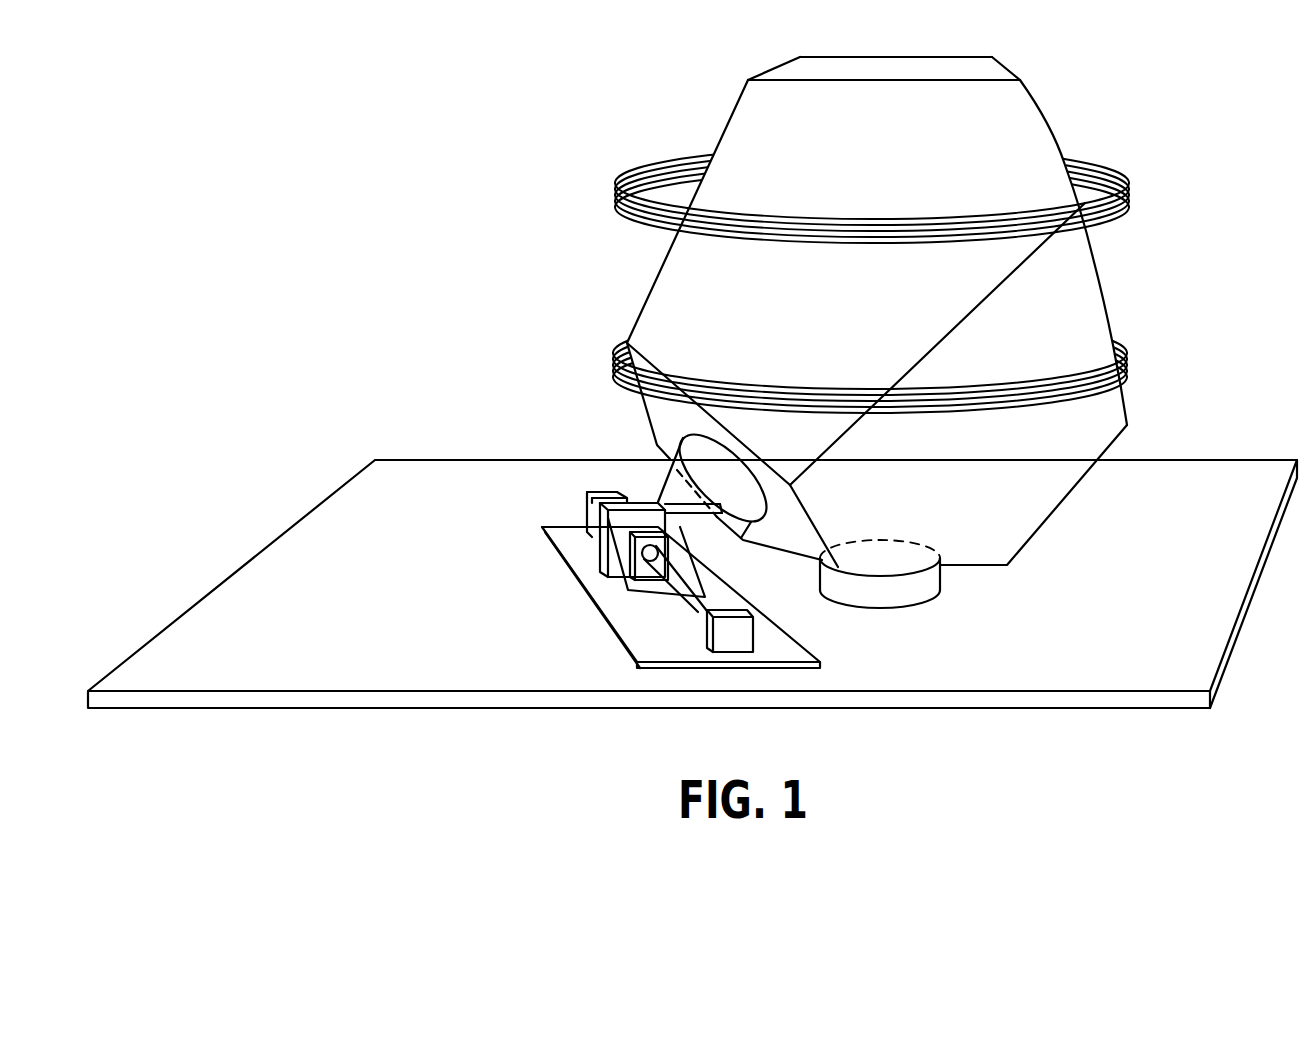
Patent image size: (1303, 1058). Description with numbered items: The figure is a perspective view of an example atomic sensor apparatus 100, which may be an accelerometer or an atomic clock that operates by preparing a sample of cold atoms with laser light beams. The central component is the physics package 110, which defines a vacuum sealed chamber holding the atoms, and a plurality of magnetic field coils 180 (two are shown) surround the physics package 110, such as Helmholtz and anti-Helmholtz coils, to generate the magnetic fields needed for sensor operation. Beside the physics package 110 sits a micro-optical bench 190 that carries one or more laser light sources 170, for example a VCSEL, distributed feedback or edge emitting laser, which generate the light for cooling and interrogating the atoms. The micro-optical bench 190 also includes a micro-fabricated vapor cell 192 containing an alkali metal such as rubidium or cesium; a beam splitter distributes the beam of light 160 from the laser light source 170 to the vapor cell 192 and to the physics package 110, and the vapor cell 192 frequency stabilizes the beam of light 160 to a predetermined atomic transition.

The atomic sensor apparatus 100 is at (470, 168).
The physics package 110 is at (1018, 117).
The magnetic field coils 180 is at (1126, 195).
The beam of light 160 is at (663, 488).
The vapor cell 192 is at (603, 546).
The micro-optical bench 190 is at (620, 607).
The laser light source 170 is at (743, 647).